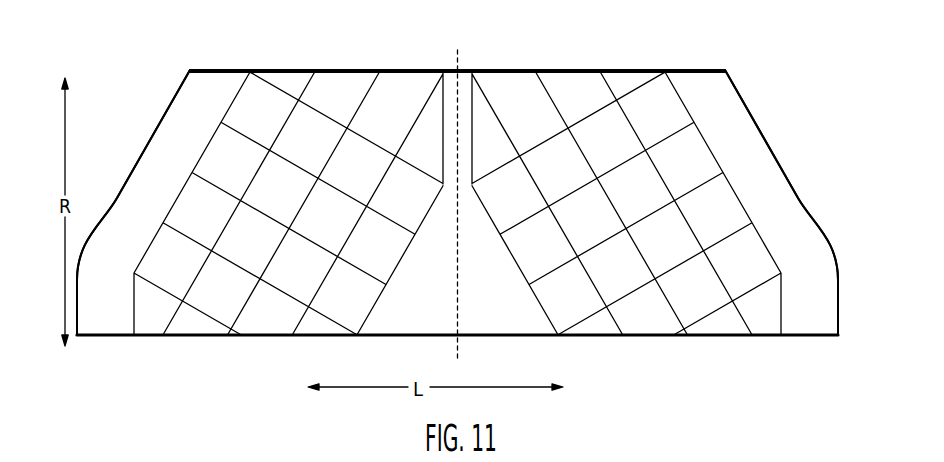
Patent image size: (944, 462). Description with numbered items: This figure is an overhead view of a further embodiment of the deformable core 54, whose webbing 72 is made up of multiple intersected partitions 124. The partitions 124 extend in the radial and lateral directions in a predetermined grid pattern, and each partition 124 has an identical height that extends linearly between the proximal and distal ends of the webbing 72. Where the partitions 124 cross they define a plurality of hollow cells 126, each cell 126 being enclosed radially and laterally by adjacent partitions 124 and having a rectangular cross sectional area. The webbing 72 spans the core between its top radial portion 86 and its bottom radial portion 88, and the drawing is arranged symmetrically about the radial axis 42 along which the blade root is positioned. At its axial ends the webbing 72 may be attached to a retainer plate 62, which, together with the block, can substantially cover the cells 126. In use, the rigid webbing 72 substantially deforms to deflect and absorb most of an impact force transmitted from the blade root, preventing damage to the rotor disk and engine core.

The deformable core 54 is at (197, 102).
The webbing 72 is at (178, 185).
The top radial portion 86 is at (343, 70).
The retainer plate 62 is at (753, 113).
The bottom radial portion 88 is at (678, 337).
The radial axis 42 is at (455, 313).
The intersected partitions 124 is at (318, 247).
The hollow cells 126 is at (657, 112).